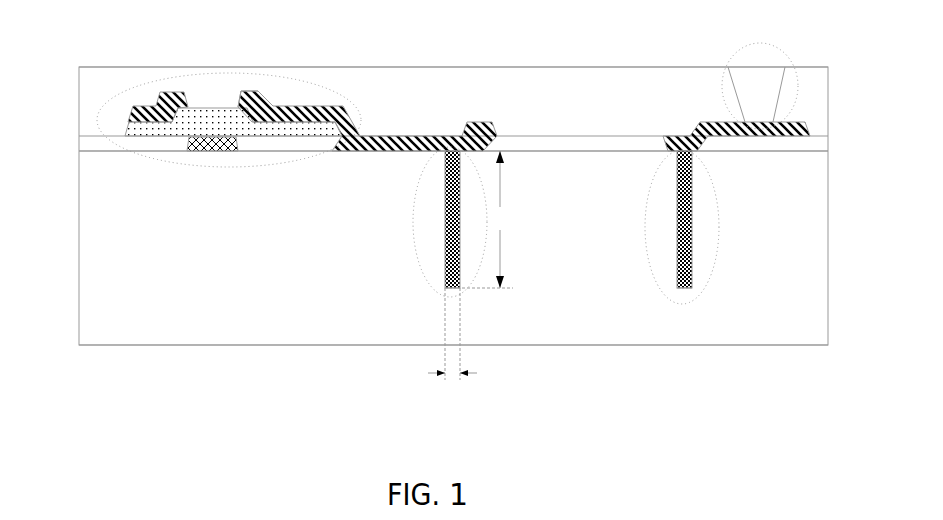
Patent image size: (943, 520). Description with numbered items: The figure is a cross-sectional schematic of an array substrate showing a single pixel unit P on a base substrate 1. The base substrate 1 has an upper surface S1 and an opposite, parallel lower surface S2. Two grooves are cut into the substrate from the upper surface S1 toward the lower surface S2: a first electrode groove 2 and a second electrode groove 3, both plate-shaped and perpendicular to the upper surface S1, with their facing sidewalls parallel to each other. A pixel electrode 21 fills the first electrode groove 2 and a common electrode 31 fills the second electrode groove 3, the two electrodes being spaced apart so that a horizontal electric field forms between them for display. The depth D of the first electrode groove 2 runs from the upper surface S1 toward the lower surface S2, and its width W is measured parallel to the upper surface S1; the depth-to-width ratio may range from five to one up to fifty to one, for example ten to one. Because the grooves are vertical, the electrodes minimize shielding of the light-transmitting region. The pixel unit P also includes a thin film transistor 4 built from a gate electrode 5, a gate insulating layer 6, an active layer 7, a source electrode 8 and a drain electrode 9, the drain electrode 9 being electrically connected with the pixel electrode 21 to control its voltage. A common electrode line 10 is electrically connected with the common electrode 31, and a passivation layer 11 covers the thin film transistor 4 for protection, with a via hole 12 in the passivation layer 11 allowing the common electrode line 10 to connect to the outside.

The pixel unit P is at (98, 29).
The base substrate 1 is at (328, 315).
The passivation layer 11 is at (493, 88).
The gate insulating layer 6 is at (287, 143).
The upper surface S1 is at (113, 150).
The lower surface S2 is at (120, 345).
The active layer 7 is at (193, 115).
The gate electrode 5 is at (212, 139).
The source electrode 8 is at (170, 90).
The drain electrode 9 is at (255, 96).
The thin film transistor 4 is at (341, 99).
The common electrode line 10 is at (670, 138).
The via hole 12 is at (785, 55).
The first electrode groove 2 is at (462, 288).
The pixel electrode 21 is at (463, 290).
The second electrode groove 3 is at (692, 303).
The common electrode 31 is at (680, 290).
The depth D is at (487, 219).
The width W is at (452, 334).